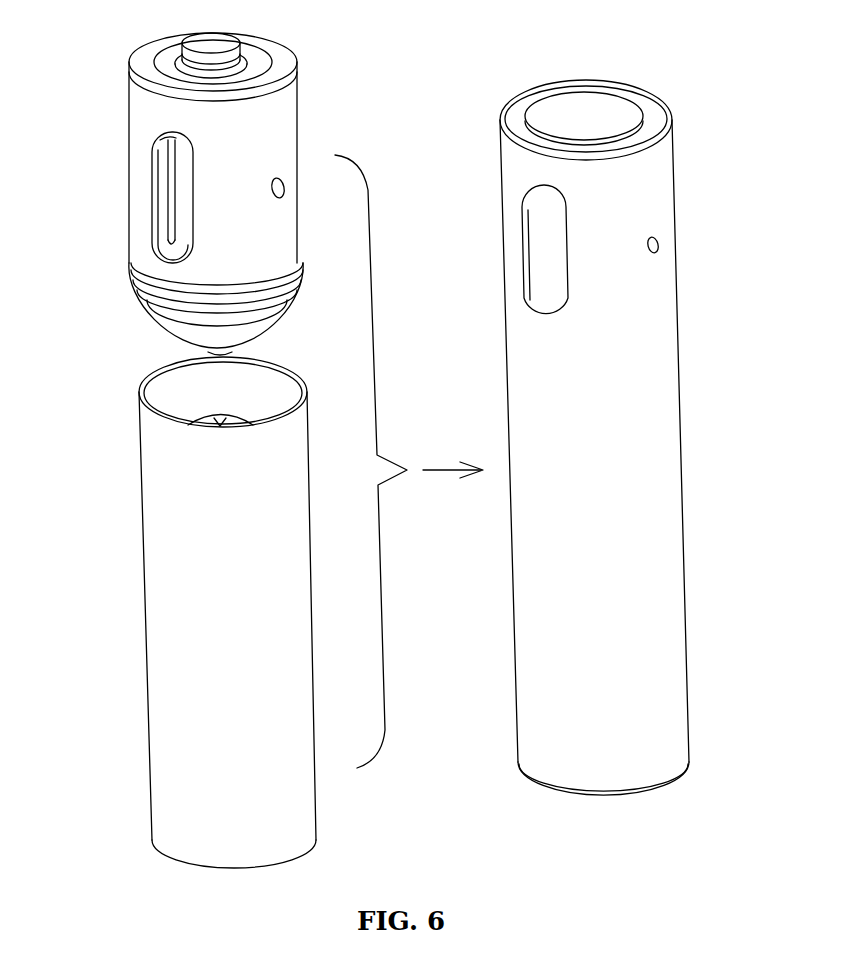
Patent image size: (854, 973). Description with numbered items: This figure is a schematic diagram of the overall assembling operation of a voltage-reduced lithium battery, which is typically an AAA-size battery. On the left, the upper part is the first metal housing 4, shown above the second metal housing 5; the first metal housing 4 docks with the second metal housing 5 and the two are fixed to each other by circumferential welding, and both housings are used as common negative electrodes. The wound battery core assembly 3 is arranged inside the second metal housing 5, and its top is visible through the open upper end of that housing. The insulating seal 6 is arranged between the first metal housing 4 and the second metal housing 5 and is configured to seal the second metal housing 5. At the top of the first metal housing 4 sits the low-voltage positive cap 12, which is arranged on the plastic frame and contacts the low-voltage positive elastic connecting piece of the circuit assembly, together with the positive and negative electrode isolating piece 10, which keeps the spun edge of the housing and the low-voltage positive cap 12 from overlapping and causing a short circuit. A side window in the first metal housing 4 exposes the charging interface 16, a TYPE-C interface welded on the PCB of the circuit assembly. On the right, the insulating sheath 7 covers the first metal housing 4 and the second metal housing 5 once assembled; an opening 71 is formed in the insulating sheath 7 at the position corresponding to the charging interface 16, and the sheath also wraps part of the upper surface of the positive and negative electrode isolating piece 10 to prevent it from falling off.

The wound battery core assembly 3 is at (213, 415).
The first metal housing 4 is at (165, 117).
The second metal housing 5 is at (203, 623).
The insulating seal 6 is at (170, 302).
The insulating sheath 7 is at (625, 415).
The positive and negative electrode isolating piece 10 is at (187, 68).
The low-voltage positive cap 12 is at (222, 68).
The charging interface 16 is at (183, 197).
The opening 71 is at (543, 245).